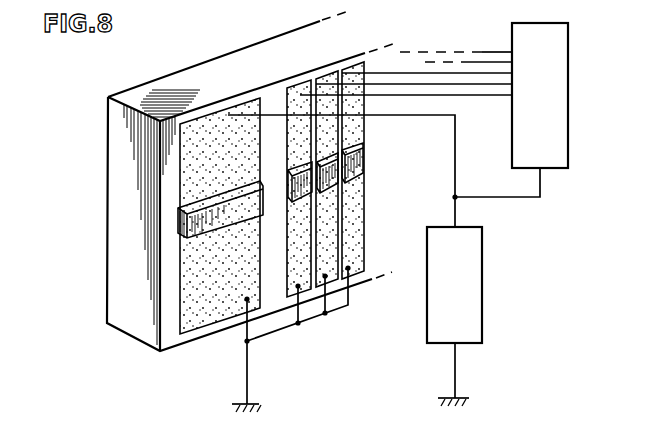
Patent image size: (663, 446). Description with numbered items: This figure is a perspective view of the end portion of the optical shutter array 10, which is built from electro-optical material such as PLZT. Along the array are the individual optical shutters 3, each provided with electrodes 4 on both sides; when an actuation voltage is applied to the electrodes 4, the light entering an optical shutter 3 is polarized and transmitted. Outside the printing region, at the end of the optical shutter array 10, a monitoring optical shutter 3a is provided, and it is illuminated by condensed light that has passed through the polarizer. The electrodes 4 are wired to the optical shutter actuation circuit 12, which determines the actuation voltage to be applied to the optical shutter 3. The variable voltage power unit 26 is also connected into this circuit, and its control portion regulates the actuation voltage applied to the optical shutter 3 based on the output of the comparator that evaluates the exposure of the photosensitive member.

The optical shutter array 10 is at (110, 209).
The optical shutter actuation circuit 12 is at (560, 89).
The variable voltage power unit 26 is at (475, 298).
The optical shutter 3 is at (360, 176).
The monitoring optical shutter 3a is at (188, 238).
The electrodes 4 is at (352, 131).